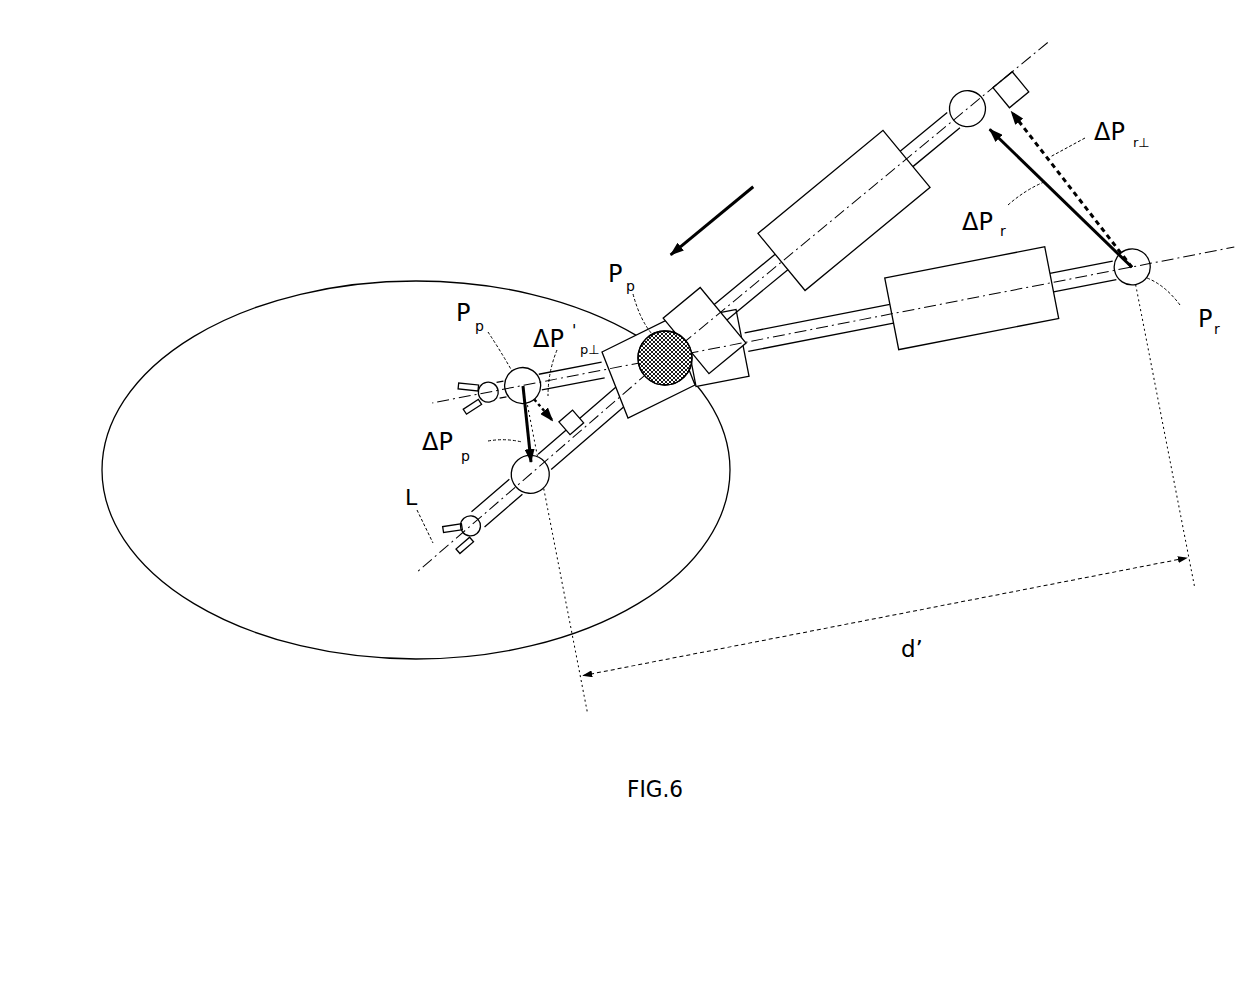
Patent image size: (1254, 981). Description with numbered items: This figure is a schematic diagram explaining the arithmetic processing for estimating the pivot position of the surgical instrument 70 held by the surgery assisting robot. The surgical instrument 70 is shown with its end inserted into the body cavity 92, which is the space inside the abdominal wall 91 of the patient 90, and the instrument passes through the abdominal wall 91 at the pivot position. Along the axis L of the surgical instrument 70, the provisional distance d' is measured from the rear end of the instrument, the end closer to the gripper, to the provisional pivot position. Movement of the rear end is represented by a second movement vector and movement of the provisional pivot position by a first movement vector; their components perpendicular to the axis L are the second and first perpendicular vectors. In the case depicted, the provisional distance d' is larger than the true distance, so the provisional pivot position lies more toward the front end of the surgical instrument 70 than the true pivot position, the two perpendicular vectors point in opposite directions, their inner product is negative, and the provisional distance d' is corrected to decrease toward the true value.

The surgical instrument 70 is at (749, 139).
The patient 90 is at (369, 211).
The abdominal wall 91 is at (480, 281).
The body cavity 92 is at (290, 320).